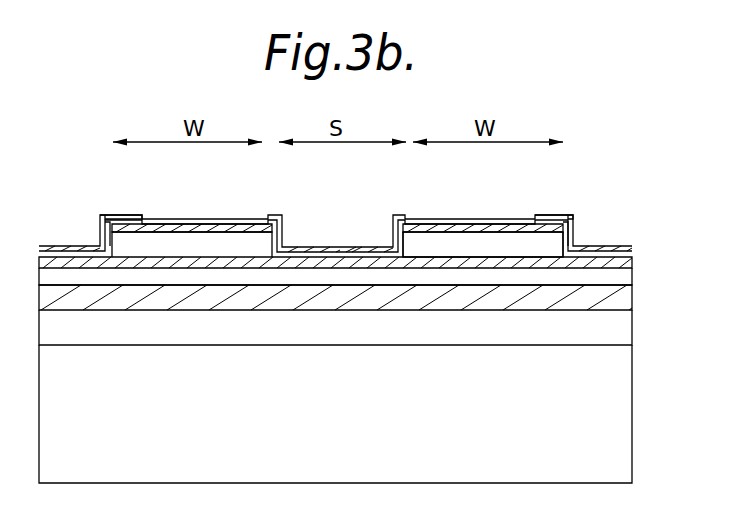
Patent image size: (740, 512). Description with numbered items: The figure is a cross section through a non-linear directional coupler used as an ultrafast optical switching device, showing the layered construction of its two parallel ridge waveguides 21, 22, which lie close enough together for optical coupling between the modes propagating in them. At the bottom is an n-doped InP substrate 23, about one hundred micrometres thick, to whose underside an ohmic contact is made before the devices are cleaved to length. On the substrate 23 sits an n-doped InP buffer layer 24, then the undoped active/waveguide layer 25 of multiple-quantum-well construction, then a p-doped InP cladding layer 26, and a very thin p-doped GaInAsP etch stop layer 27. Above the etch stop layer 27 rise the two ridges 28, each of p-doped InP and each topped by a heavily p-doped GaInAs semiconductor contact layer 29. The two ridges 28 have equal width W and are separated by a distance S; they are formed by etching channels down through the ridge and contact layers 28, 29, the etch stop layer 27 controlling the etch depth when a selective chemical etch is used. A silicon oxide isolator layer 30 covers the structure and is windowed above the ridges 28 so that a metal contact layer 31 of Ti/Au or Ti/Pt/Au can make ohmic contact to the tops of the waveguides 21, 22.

The ridge waveguide 21 is at (121, 211).
The ridge waveguide 22 is at (503, 218).
The substrate 23 is at (607, 429).
The buffer layer 24 is at (610, 336).
The active/waveguide layer 25 is at (610, 302).
The cladding layer 26 is at (610, 275).
The etch stop layer 27 is at (356, 262).
The ridge 28 is at (573, 224).
The semiconductor contact layer 29 is at (547, 245).
The isolator layer 30 is at (273, 216).
The metal contact layer 31 is at (199, 217).